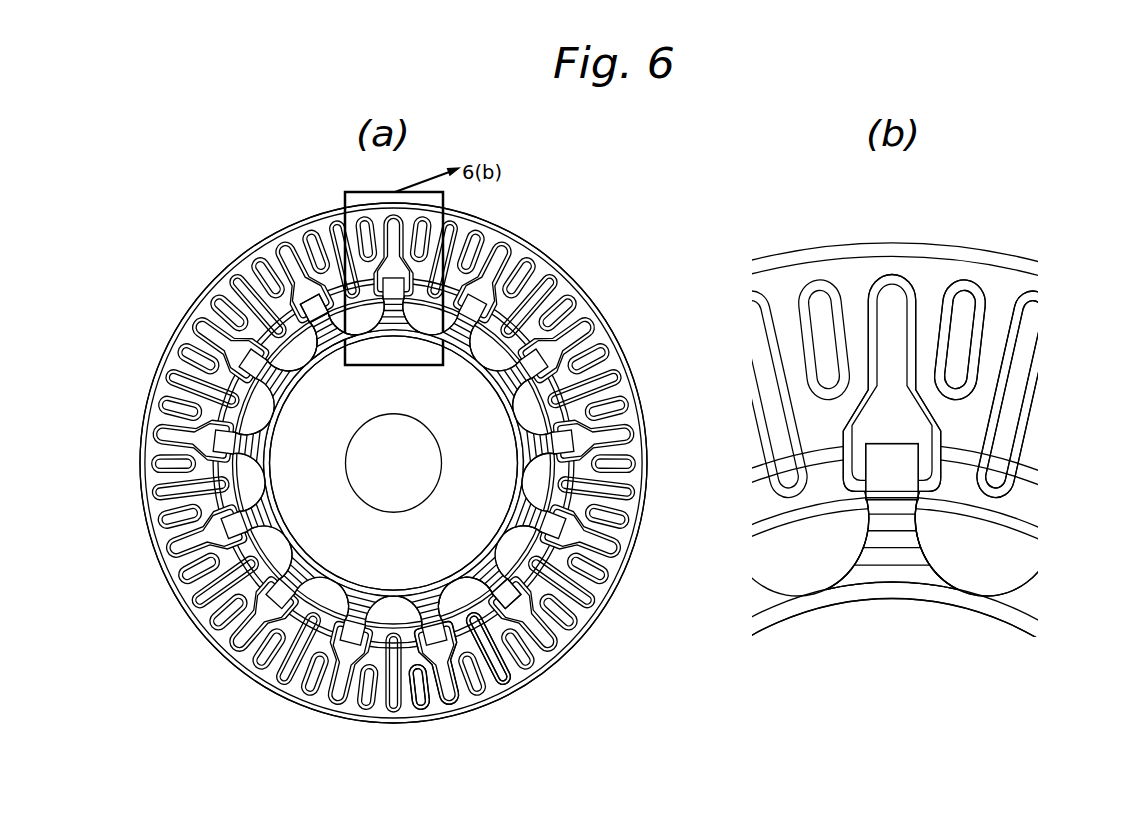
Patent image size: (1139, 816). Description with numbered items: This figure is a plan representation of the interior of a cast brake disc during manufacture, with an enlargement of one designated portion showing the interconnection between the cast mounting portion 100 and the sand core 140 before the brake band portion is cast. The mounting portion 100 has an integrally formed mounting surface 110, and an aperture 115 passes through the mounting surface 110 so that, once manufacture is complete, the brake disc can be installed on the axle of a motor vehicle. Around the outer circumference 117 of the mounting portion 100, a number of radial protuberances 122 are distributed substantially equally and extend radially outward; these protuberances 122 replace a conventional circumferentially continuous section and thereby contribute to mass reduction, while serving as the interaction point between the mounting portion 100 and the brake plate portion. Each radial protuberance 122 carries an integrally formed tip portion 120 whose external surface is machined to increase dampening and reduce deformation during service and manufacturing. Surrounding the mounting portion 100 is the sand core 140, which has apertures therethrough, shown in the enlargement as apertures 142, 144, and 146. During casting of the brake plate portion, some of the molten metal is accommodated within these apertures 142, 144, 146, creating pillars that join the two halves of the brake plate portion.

The cast mounting portion 100 is at (352, 560).
The mounting surface 110 is at (306, 518).
The aperture 115 is at (385, 462).
The outer circumference 117 is at (476, 362).
The tip portion 120 is at (310, 302).
The radial protuberances 122 is at (314, 337).
The sand core 140 is at (520, 242).
The aperture 142 is at (452, 708).
The aperture 144 is at (481, 698).
The aperture 146 is at (507, 687).